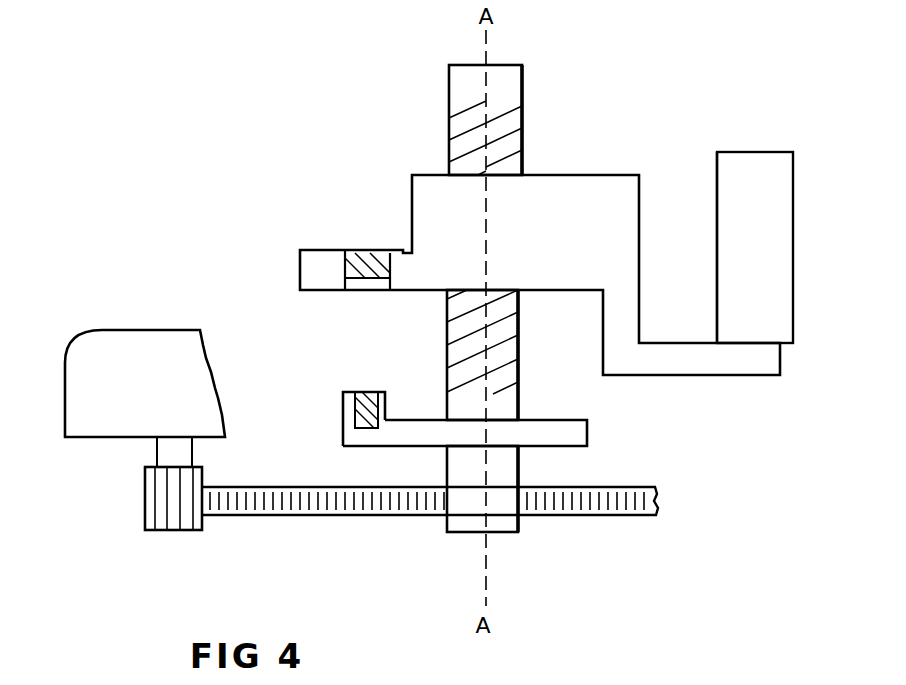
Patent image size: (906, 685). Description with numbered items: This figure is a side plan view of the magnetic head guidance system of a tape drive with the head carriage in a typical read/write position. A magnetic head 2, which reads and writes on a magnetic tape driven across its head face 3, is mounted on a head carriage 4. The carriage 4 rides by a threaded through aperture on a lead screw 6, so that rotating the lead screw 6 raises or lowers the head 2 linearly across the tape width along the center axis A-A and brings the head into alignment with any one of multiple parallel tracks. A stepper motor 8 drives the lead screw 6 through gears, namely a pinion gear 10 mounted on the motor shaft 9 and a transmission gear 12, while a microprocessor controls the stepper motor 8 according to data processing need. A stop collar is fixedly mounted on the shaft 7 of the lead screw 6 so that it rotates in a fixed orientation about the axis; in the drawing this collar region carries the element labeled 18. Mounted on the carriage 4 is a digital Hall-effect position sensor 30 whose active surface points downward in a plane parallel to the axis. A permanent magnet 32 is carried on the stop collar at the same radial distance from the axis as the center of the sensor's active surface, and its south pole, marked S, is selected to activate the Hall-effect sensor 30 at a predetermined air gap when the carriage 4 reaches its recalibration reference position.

The magnetic head 2 is at (737, 151).
The head face 3 is at (716, 198).
The head carriage 4 is at (415, 173).
The lead screw 6 is at (523, 131).
The shaft 7 is at (491, 488).
The stepper motor 8 is at (84, 341).
The motor shaft 9 is at (183, 452).
The pinion gear 10 is at (145, 506).
The transmission gear 12 is at (259, 516).
The arm 18 is at (589, 437).
The digital position sensor 30 is at (365, 249).
The permanent magnet 32 is at (362, 429).